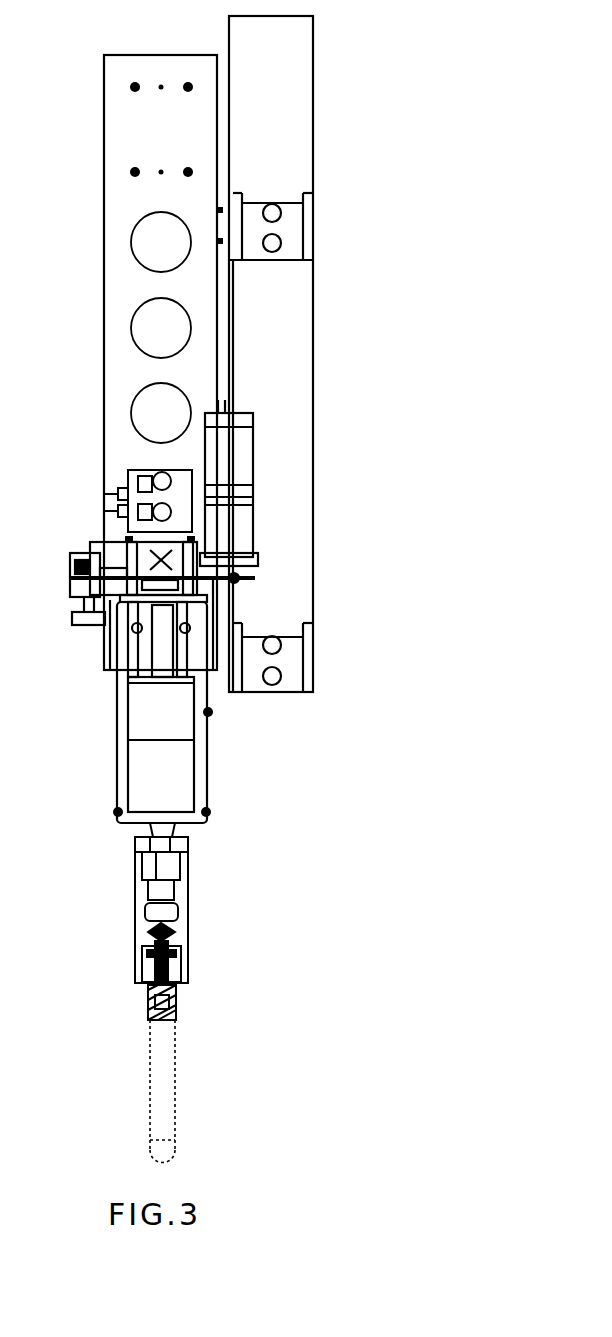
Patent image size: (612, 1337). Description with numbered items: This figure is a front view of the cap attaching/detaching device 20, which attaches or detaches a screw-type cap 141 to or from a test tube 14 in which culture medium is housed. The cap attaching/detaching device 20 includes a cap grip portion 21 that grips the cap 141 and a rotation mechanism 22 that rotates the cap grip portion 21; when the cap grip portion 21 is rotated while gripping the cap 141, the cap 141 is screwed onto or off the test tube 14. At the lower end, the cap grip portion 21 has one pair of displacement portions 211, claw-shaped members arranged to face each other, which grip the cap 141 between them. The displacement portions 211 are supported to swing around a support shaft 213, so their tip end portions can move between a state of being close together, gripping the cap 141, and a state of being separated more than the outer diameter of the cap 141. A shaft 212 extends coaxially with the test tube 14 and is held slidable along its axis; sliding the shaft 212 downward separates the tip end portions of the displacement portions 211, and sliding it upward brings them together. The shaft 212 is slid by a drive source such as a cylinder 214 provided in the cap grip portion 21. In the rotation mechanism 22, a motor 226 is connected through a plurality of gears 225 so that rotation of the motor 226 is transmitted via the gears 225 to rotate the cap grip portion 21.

The cap attaching/detaching device 20 is at (382, 268).
The motor 226 is at (257, 460).
The cylinder 214 is at (150, 472).
The gears 225 is at (125, 548).
The rotation mechanism 22 is at (192, 860).
The shaft 212 is at (178, 898).
The support shaft 213 is at (180, 930).
The cap grip portion 21 is at (183, 993).
The cap 141 is at (148, 997).
The displacement portions 211 is at (178, 1018).
The test tube 14 is at (178, 1125).